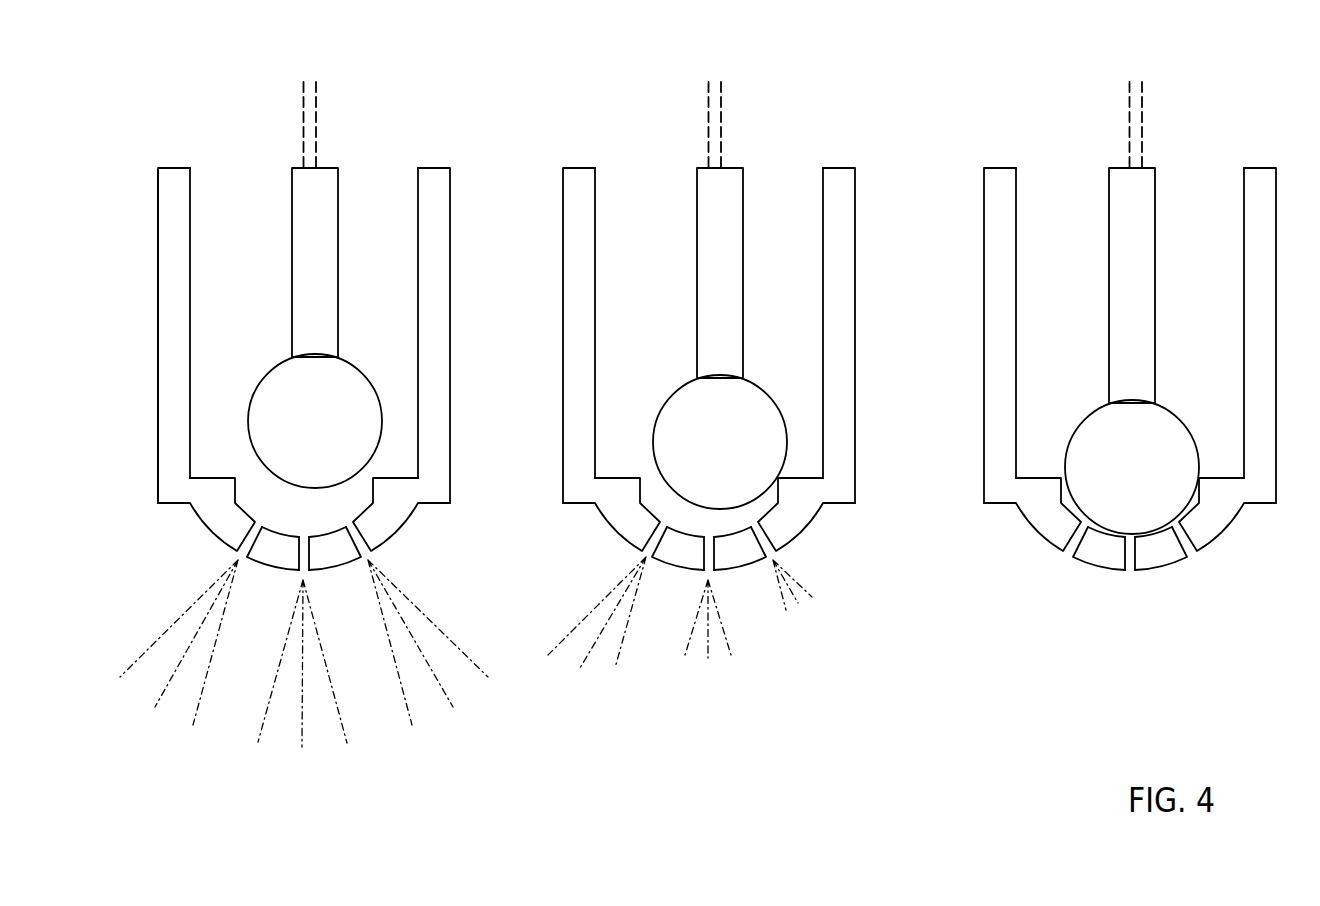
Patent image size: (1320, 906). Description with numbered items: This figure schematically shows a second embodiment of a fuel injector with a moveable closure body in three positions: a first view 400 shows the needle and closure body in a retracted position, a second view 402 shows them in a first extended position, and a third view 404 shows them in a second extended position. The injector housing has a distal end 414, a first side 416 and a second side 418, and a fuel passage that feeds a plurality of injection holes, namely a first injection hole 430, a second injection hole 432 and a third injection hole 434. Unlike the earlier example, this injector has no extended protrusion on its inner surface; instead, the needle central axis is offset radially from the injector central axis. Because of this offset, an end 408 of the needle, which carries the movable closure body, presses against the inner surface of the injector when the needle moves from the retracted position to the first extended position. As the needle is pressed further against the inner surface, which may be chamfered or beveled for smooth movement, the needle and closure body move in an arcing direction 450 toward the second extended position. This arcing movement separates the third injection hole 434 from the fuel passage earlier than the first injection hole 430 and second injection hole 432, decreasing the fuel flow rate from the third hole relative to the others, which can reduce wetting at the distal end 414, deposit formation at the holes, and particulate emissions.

The first view 400 is at (131, 126).
The second view 402 is at (536, 126).
The third view 404 is at (951, 126).
The end of the needle 408 is at (300, 503).
The distal end 414 is at (282, 600).
The first side 416 is at (141, 422).
The second side 418 is at (465, 422).
The first injection hole 430 is at (246, 545).
The second injection hole 432 is at (303, 548).
The third injection hole 434 is at (367, 543).
The arcing direction 450 is at (720, 509).